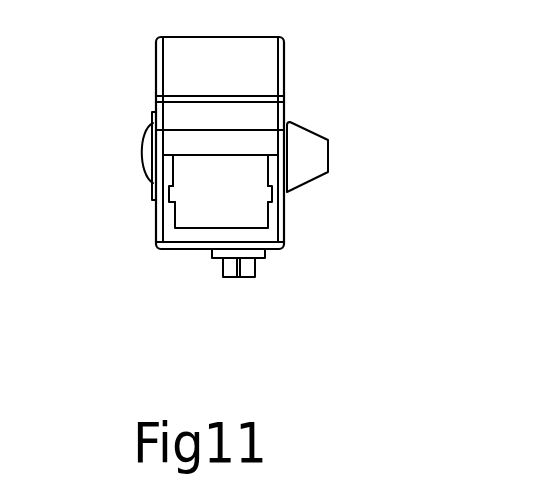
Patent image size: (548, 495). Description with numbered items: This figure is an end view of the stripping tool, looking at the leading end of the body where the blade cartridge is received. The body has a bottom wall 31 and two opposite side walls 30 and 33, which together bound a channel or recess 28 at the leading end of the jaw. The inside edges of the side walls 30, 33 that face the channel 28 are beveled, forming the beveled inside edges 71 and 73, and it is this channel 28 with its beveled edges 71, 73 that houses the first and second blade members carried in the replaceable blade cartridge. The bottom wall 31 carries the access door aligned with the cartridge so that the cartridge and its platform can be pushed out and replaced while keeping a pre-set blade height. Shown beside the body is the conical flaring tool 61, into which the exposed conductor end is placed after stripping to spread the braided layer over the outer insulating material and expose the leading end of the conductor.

The channel 28 is at (220, 222).
The side wall 30 is at (285, 228).
The bottom wall 31 is at (182, 252).
The side wall 33 is at (157, 230).
The conical flaring tool 61 is at (318, 158).
The beveled inside edge 71 is at (273, 197).
The beveled inside edge 73 is at (170, 193).